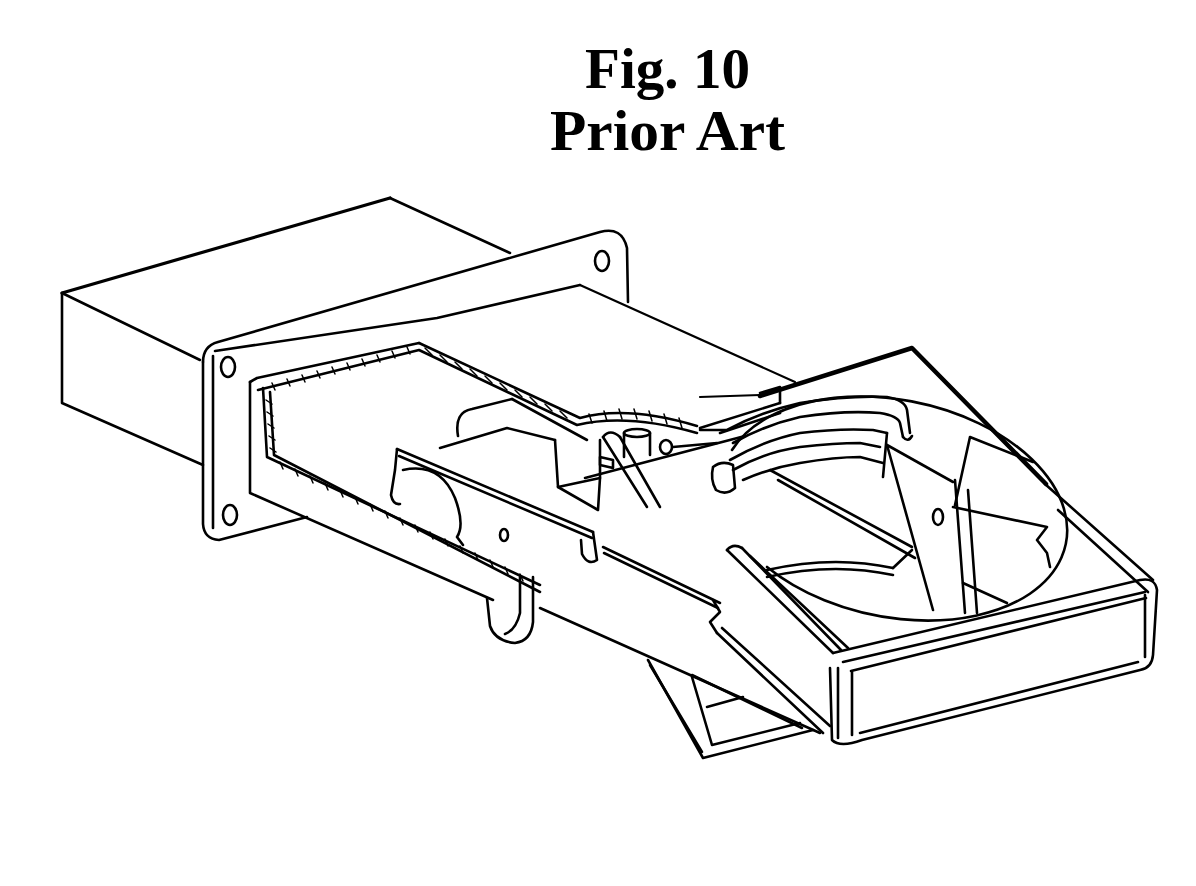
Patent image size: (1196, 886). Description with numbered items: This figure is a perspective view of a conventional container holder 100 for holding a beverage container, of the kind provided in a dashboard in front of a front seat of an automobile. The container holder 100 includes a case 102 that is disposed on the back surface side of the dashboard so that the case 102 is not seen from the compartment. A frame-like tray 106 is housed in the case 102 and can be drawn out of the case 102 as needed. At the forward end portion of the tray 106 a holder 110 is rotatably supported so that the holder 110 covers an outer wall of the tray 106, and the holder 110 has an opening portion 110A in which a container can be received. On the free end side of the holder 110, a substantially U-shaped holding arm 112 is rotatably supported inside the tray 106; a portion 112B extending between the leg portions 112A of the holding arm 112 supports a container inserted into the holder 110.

The container holder 100 is at (834, 296).
The case 102 is at (423, 545).
The tray 106 is at (687, 633).
The holder 110 is at (786, 663).
The opening portion 110A is at (1014, 487).
The holding arm 112 is at (645, 661).
The leg portions 112A is at (682, 727).
The portion extending between leg portions 112B is at (744, 720).